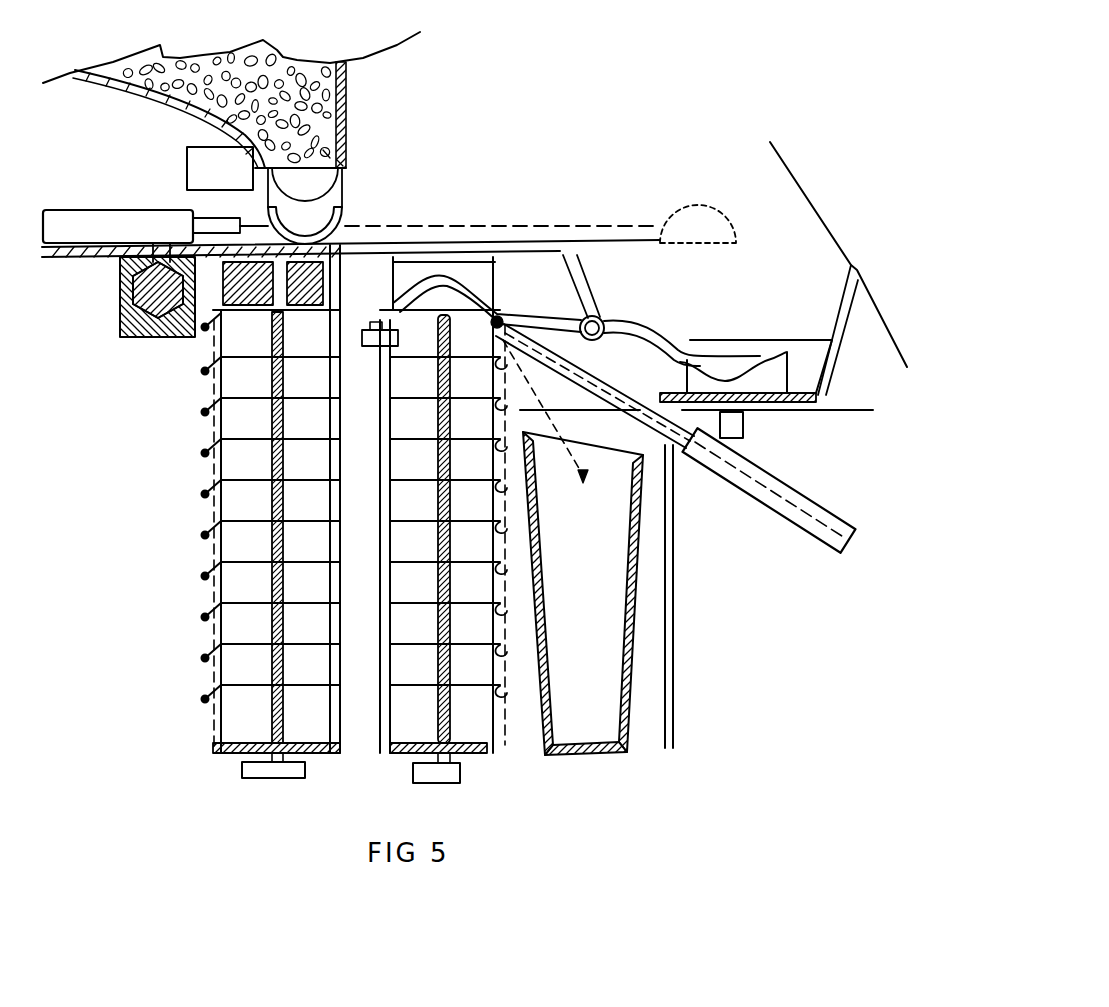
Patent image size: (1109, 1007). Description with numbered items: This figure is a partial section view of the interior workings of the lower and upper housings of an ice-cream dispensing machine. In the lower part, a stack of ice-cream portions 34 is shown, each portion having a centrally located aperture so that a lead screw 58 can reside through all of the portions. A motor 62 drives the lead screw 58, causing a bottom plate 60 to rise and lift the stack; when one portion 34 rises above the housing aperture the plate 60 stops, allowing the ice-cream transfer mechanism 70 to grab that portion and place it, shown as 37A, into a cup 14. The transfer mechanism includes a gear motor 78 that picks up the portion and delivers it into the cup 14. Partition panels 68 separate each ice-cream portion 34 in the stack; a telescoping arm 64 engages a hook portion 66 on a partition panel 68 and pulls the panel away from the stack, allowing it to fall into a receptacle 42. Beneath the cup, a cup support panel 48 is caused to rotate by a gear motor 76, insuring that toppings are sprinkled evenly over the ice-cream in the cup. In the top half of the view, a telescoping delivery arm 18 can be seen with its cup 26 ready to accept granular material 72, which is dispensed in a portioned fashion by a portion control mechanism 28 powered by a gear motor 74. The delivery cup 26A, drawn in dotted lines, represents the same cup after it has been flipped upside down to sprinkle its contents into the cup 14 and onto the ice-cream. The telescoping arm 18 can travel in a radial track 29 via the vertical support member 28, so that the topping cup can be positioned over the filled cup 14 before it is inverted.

The cup 14 is at (813, 363).
The telescoping delivery arm 18 is at (110, 217).
The cup 26 is at (343, 217).
The delivery cup 26A is at (687, 203).
The portion control mechanism 28 is at (343, 163).
The radial track 29 is at (140, 333).
The ice-cream portion 34 is at (462, 273).
The tray 37A is at (777, 353).
The receptacle 42 is at (583, 703).
The cup support panel 48 is at (840, 413).
The lead screw 58 is at (220, 615).
The bottom plate 60 is at (220, 753).
The motor 62 is at (257, 772).
The telescoping arm 64 is at (780, 513).
The hook portion 66 is at (493, 700).
The partition panel 68 is at (393, 750).
The ice-cream transfer mechanism 70 is at (683, 318).
The granular material 72 is at (347, 82).
The gear motor 74 is at (200, 163).
The gear motor 76 is at (743, 437).
The gear motor 78 is at (587, 318).